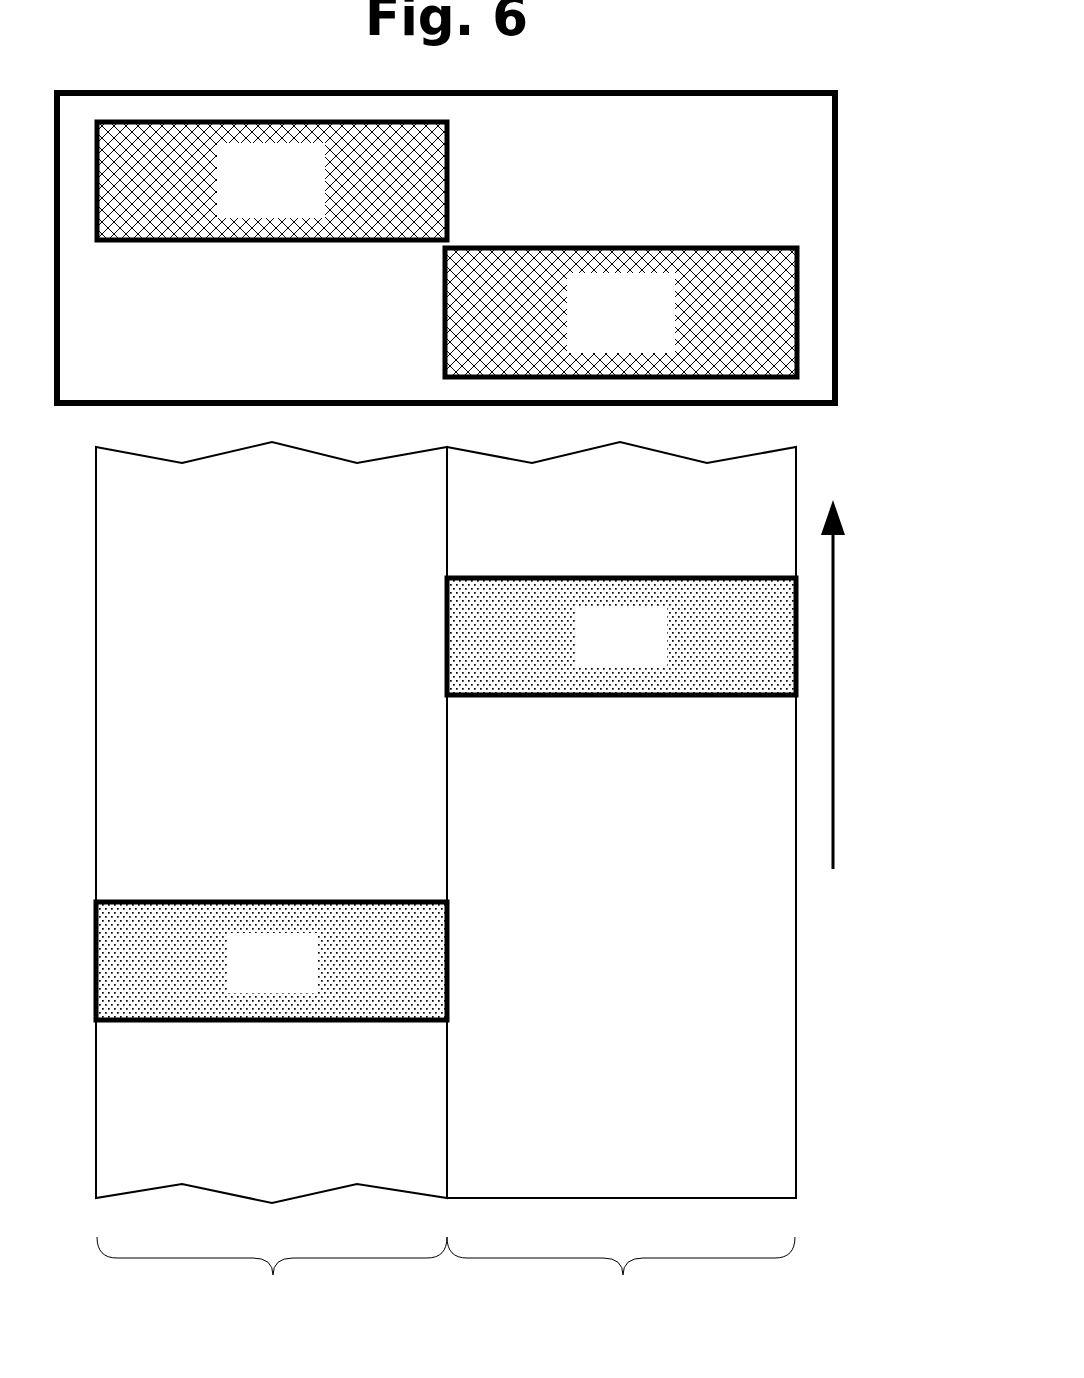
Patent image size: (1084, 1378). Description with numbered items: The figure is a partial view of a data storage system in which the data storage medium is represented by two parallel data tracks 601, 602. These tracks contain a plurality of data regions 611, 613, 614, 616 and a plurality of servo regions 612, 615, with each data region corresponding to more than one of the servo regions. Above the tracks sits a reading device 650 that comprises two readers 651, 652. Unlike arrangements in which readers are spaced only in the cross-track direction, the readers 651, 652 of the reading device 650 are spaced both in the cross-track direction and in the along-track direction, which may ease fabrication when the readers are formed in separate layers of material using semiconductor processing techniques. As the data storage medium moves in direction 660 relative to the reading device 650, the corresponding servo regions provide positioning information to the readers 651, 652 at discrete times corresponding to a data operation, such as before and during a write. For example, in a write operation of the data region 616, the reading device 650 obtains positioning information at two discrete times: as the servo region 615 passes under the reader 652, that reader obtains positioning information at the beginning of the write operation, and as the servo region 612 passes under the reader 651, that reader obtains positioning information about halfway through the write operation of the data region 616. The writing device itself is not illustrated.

The reading device 650 is at (835, 93).
The reader 651 is at (272, 181).
The reader 652 is at (621, 312).
The data track 601 is at (273, 1275).
The data track 602 is at (623, 1275).
The data region 611 is at (271, 674).
The servo region 612 is at (271, 961).
The data region 613 is at (271, 1109).
The data region 614 is at (621, 512).
The servo region 615 is at (621, 636).
The data region 616 is at (621, 946).
The direction 660 is at (833, 738).